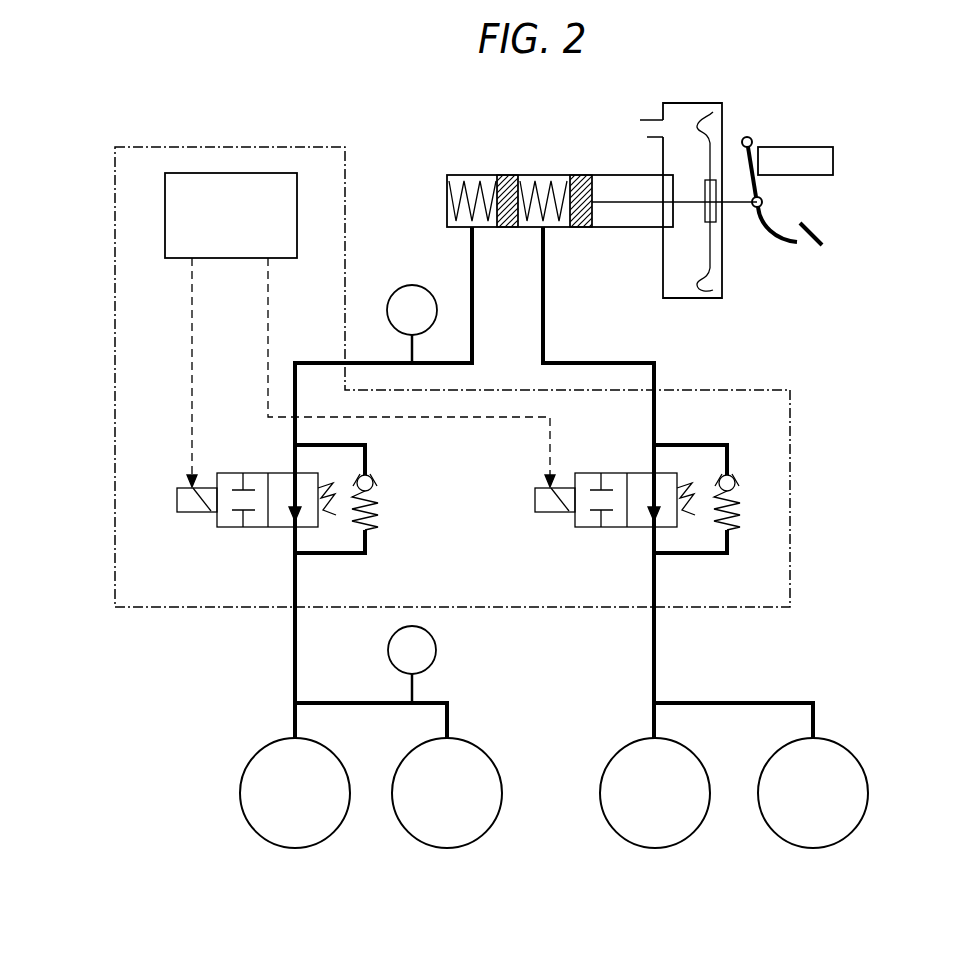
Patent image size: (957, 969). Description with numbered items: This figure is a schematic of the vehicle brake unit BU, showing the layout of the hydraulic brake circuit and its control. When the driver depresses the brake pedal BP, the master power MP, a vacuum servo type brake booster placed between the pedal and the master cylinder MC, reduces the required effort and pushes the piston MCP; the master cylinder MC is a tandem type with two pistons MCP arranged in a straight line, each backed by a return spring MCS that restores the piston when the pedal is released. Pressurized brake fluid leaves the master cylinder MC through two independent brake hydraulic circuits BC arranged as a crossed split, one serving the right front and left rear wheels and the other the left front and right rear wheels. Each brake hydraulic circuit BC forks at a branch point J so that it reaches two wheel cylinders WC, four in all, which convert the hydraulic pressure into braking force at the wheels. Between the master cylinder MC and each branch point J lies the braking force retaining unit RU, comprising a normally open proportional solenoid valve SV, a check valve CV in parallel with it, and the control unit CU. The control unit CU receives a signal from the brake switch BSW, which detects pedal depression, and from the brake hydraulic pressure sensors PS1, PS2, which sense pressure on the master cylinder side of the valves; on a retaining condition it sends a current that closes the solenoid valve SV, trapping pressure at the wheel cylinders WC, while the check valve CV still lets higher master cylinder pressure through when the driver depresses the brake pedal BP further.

The master cylinder MC is at (436, 174).
The return spring MCS is at (447, 186).
The piston MCP is at (507, 175).
The master power MP is at (663, 272).
The brake switch BSW is at (835, 160).
The brake pedal BP is at (785, 245).
The brake unit BU is at (900, 298).
The control unit CU is at (165, 210).
The braking force retaining unit RU is at (114, 410).
The brake hydraulic pressure sensor PS1 is at (412, 285).
The brake hydraulic pressure sensor PS2 is at (437, 650).
The proportional solenoid valve SV is at (215, 527).
The check valve CV is at (358, 545).
The brake hydraulic circuit BC is at (293, 647).
The branch point J is at (298, 695).
The wheel cylinder WC is at (295, 848).